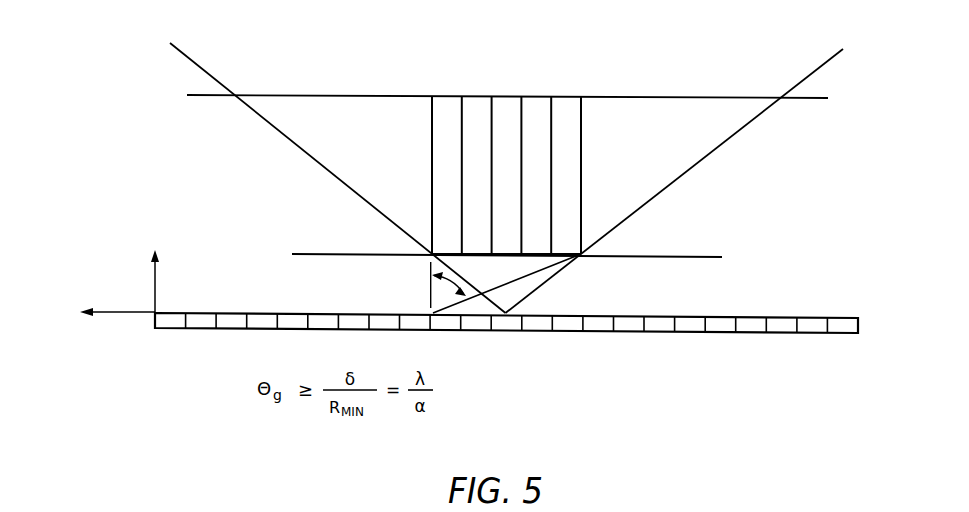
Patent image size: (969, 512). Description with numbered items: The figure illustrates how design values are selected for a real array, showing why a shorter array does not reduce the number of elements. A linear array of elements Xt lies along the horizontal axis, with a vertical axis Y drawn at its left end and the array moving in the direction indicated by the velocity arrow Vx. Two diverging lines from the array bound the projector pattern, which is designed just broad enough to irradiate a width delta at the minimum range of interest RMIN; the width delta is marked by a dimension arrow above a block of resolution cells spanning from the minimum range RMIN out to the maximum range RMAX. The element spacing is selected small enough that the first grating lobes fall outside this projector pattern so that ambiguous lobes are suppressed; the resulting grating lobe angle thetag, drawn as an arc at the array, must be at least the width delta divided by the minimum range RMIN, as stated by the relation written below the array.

The maximum range line RMAX is at (518, 115).
The minimum range of interest RMIN is at (517, 273).
The irradiated width delta is at (581, 90).
The transducer array Xt is at (506, 335).
The Y axis Y is at (164, 276).
The velocity vector along X Vx is at (100, 315).
The grating lobe angle thetag is at (427, 285).